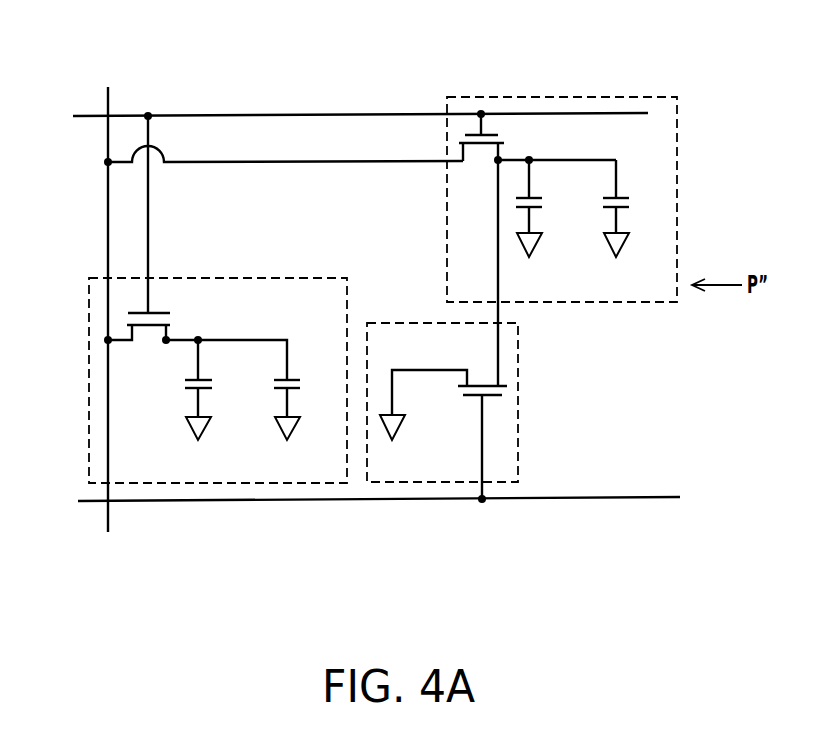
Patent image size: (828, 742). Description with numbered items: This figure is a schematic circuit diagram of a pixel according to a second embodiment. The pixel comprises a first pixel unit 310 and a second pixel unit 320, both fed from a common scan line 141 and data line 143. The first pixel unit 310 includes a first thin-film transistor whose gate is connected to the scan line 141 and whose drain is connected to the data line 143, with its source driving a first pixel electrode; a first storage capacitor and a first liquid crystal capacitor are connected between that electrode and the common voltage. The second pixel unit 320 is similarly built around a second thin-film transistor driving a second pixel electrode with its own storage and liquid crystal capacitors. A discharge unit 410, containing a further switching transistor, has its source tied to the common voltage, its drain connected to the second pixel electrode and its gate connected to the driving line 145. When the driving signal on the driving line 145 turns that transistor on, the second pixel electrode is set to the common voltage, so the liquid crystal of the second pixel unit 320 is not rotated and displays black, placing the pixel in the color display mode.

The scan line 141 is at (91, 118).
The data line 143 is at (108, 100).
The driving line 145 is at (92, 502).
The first pixel unit 310 is at (273, 273).
The second pixel unit 320 is at (680, 180).
The discharge unit 410 is at (520, 423).